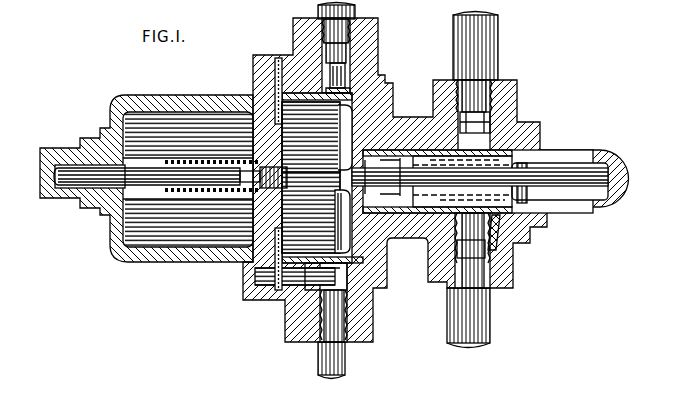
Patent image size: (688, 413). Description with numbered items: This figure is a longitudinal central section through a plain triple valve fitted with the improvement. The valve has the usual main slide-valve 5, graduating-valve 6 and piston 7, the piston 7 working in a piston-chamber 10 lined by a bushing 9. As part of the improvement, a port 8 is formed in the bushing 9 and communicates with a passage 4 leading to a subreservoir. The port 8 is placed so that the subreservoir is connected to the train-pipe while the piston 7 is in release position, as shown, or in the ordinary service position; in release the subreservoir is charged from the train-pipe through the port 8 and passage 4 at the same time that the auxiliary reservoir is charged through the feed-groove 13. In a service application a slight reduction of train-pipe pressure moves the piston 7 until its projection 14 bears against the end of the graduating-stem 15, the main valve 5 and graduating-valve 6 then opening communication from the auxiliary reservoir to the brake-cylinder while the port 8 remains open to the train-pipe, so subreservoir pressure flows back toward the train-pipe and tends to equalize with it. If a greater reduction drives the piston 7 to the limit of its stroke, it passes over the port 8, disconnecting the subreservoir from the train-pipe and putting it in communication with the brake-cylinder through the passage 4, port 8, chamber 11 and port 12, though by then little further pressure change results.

The passage 4 is at (330, 74).
The main slide-valve 5 is at (478, 190).
The graduating-valve 6 is at (462, 198).
The piston 7 is at (362, 205).
The port 8 is at (330, 78).
The bushing 9 is at (308, 98).
The piston-chamber 10 is at (311, 177).
The chamber 11 is at (387, 208).
The port 12 is at (490, 244).
The feed-groove 13 is at (373, 80).
The projection 14 is at (312, 168).
The graduating-stem 15 is at (170, 177).